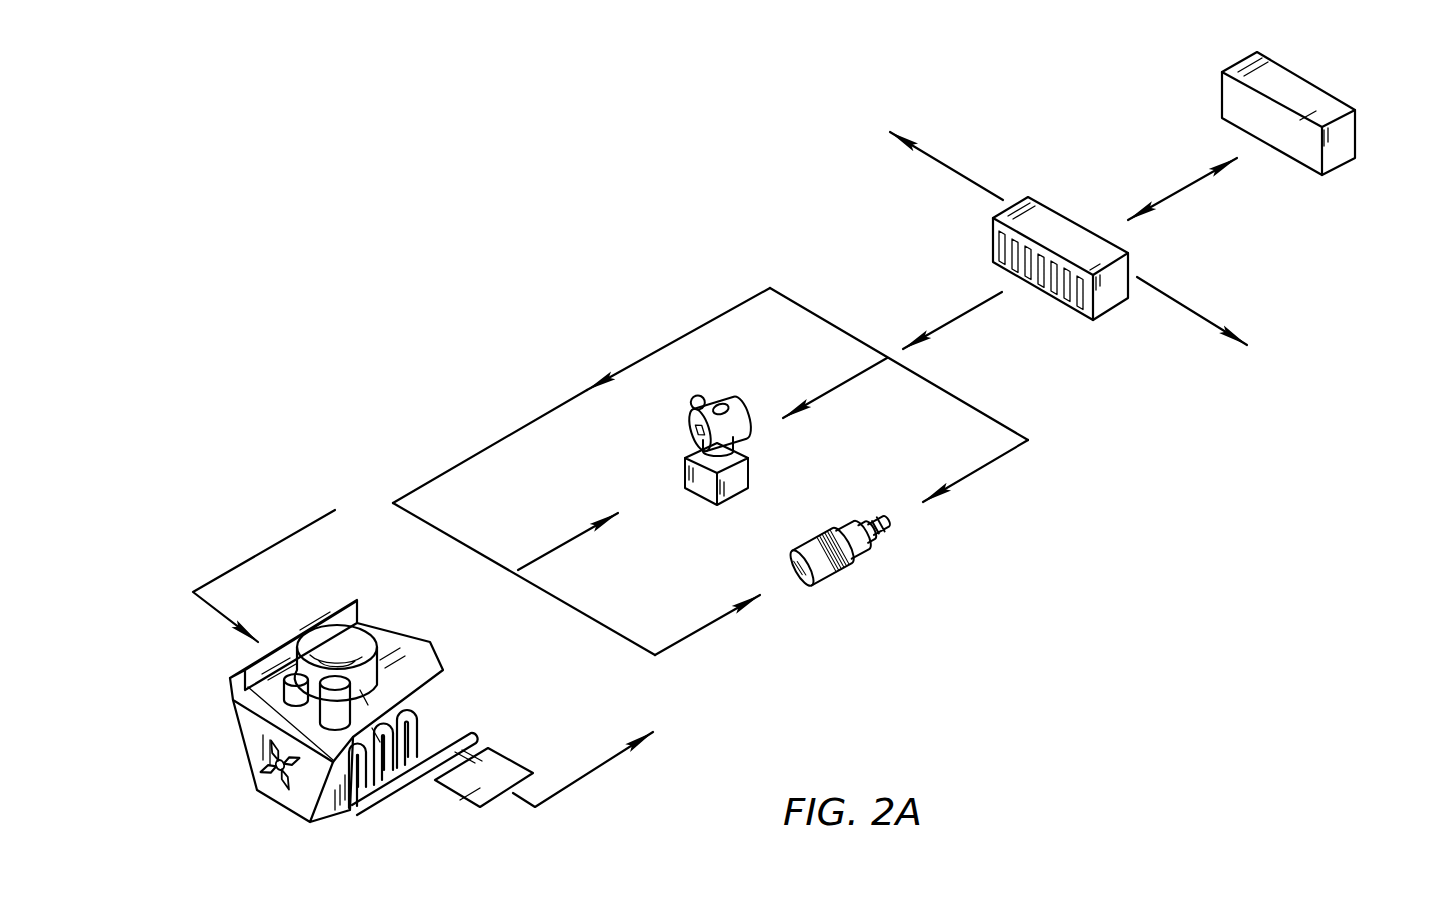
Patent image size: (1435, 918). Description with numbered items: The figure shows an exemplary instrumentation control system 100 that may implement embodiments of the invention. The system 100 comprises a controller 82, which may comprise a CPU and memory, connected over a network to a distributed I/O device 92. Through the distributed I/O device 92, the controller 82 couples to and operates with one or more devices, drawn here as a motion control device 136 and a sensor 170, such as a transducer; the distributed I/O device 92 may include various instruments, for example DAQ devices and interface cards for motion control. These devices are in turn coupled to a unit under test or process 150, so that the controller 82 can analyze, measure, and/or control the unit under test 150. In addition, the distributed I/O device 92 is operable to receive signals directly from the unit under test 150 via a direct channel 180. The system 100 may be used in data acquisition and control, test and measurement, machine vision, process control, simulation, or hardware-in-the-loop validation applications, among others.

The instrumentation control system 100 is at (633, 123).
The controller 82 is at (1303, 83).
The distributed I/O device 92 is at (1055, 218).
The direct channel 180 is at (610, 547).
The sensor 170 is at (685, 476).
The motion control device 136 is at (838, 567).
The unit under test 150 is at (242, 735).